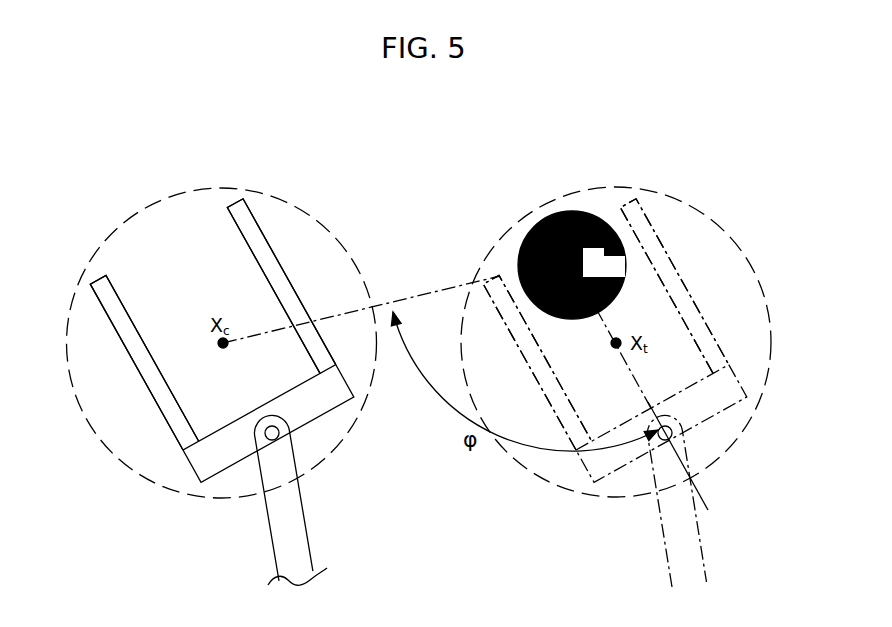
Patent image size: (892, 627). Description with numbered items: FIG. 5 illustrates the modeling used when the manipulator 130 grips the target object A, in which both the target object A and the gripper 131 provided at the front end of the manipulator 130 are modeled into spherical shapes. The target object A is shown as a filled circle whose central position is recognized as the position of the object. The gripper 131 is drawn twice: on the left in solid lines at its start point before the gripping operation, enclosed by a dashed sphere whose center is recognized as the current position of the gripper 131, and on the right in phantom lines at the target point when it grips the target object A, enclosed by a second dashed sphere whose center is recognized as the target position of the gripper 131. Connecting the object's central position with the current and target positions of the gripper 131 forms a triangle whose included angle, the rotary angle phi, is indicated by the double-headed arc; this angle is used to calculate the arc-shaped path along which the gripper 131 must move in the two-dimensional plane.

The manipulator 130 is at (213, 527).
The gripper 131 is at (140, 377).
The target object A is at (550, 210).